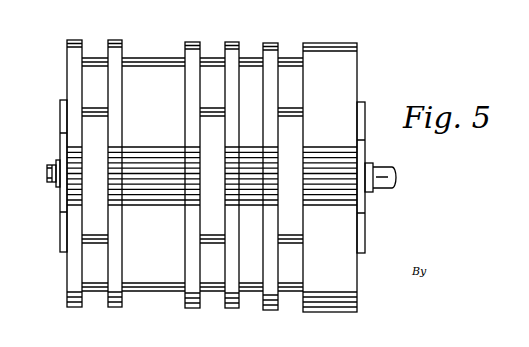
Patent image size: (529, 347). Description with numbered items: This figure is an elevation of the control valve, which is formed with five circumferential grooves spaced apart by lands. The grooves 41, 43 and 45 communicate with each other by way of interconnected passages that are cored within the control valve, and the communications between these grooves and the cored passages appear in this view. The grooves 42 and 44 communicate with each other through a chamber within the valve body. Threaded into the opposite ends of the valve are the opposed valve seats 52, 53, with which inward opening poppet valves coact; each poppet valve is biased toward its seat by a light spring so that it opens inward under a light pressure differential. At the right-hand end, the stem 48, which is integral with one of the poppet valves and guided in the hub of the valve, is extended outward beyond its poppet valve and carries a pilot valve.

The groove 41 is at (92, 57).
The groove 42 is at (142, 62).
The groove 43 is at (208, 56).
The groove 44 is at (248, 59).
The groove 45 is at (287, 58).
The stem 48 is at (381, 169).
The valve seat 52 is at (60, 119).
The valve seat 53 is at (366, 225).